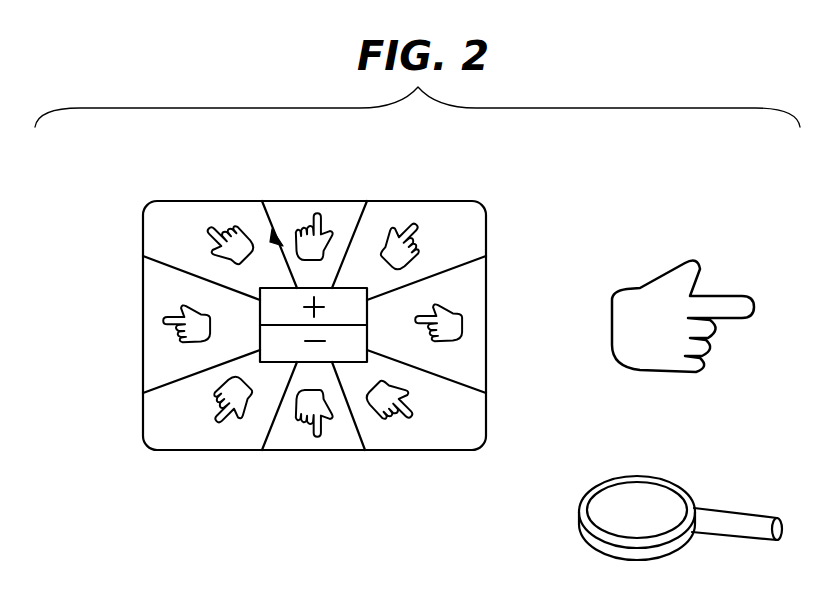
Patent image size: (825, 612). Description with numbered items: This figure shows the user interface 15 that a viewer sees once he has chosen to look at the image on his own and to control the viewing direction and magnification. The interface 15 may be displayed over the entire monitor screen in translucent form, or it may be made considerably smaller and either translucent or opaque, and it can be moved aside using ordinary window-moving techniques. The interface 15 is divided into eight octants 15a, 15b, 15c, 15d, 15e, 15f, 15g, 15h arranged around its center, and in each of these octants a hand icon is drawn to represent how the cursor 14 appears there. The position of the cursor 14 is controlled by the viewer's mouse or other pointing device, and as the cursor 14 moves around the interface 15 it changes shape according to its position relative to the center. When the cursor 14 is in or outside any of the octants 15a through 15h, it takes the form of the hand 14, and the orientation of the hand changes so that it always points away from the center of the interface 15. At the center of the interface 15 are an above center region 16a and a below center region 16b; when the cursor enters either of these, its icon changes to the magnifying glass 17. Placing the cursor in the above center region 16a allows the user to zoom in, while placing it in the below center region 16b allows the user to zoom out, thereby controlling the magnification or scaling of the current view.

The cursor 14 is at (650, 293).
The user interface 15 is at (352, 182).
The octant 15a is at (297, 207).
The octant 15b is at (427, 207).
The octant 15c is at (462, 287).
The octant 15d is at (427, 435).
The octant 15e is at (333, 438).
The octant 15f is at (208, 435).
The octant 15g is at (163, 354).
The octant 15h is at (190, 207).
The above center region 16a is at (367, 310).
The below center region 16b is at (367, 338).
The magnifying glass 17 is at (657, 503).